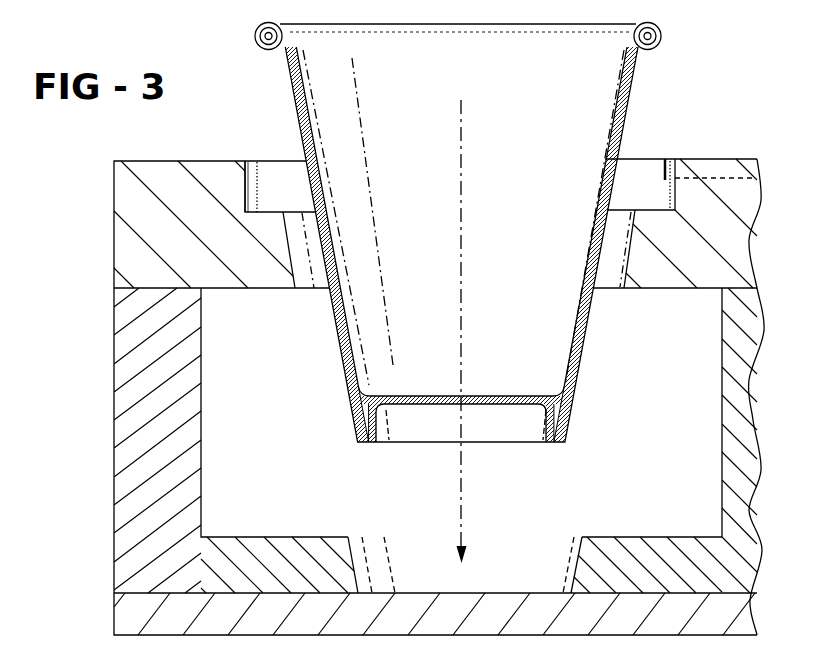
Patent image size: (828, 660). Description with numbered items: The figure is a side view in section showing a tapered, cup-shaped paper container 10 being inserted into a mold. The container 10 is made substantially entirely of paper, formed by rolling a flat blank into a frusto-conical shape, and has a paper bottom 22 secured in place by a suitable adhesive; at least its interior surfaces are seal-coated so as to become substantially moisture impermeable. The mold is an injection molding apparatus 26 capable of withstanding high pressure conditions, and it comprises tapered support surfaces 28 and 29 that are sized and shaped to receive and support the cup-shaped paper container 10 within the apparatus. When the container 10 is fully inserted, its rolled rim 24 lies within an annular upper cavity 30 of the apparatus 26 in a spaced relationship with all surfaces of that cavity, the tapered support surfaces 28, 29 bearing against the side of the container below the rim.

The cup-shaped paper container 10 is at (630, 119).
The paper bottom 22 is at (489, 405).
The rolled rim 24 is at (661, 42).
The injection molding apparatus 26 is at (104, 415).
The tapered support surface 28 is at (640, 268).
The tapered support surface 29 is at (572, 560).
The annular upper cavity 30 is at (255, 183).